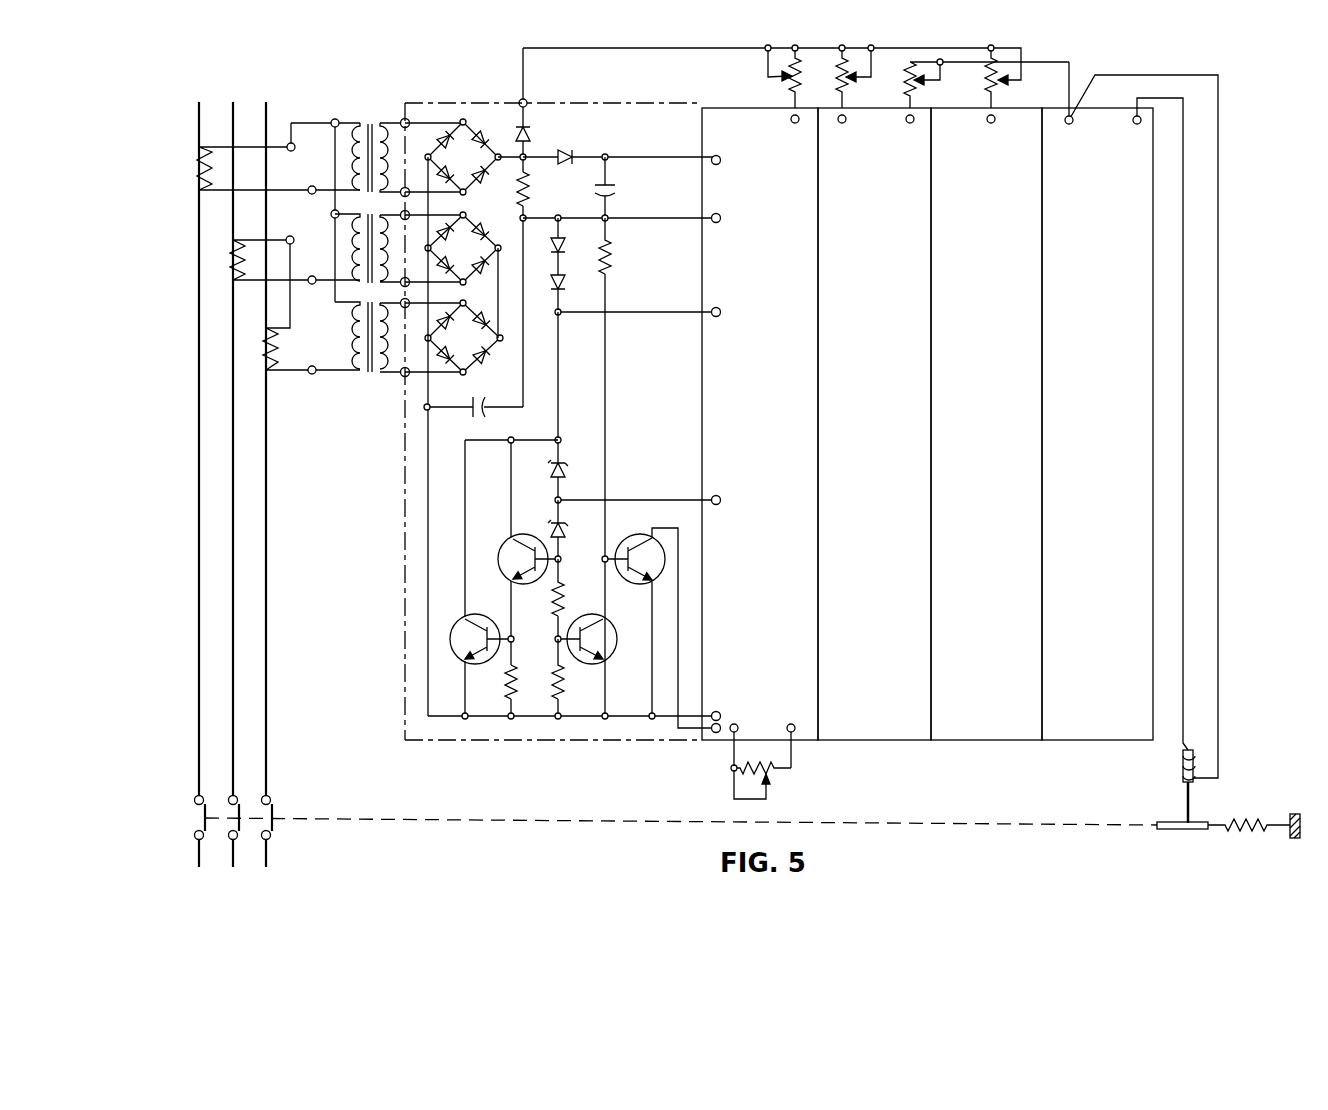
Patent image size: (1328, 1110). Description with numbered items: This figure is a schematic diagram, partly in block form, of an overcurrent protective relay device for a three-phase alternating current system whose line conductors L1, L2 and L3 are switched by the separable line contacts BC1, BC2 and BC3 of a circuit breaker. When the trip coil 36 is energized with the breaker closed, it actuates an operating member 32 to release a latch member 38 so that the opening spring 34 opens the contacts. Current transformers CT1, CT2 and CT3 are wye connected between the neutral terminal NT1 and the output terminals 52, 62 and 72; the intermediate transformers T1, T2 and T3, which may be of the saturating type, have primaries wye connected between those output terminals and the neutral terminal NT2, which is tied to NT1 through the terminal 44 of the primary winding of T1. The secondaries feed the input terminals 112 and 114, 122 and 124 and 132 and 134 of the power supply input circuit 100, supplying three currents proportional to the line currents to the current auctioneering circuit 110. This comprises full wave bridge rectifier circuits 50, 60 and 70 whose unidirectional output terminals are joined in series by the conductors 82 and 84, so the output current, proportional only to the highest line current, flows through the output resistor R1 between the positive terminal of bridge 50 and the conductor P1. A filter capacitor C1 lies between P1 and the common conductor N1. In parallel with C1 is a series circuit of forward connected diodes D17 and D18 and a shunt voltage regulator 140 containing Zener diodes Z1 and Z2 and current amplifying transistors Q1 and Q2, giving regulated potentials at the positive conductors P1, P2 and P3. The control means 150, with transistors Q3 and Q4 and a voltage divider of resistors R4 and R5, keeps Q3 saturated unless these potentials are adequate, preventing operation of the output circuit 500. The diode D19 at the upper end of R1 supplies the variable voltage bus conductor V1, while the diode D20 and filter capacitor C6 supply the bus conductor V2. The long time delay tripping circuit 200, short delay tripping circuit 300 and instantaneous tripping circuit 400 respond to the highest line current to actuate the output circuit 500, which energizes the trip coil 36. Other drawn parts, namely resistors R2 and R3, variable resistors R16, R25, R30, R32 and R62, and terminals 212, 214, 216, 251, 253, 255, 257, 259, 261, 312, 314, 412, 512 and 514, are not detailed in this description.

The line conductor L1 is at (199, 113).
The line conductor L2 is at (233, 113).
The line conductor L3 is at (266, 113).
The separable line contact BC1 is at (205, 800).
The separable line contact BC2 is at (239, 812).
The separable line contact BC3 is at (272, 812).
The current transformer CT1 is at (196, 175).
The current transformer CT2 is at (230, 262).
The current transformer CT3 is at (262, 352).
The neutral terminal NT1 is at (296, 152).
The neutral terminal NT2 is at (337, 157).
The terminal of primary winding of transformer T1 44 is at (343, 110).
The output terminal 52 is at (312, 195).
The output terminal 62 is at (312, 285).
The output terminal 72 is at (312, 375).
The intermediate transformer T1 is at (379, 121).
The intermediate transformer T2 is at (379, 211).
The intermediate transformer T3 is at (379, 393).
The input terminal 112 is at (410, 122).
The input terminal 114 is at (407, 187).
The input terminal 122 is at (410, 213).
The input terminal 124 is at (410, 300).
The input terminal 132 is at (401, 285).
The input terminal 134 is at (404, 378).
The full wave bridge rectifier circuit 50 is at (477, 168).
The full wave bridge rectifier circuit 60 is at (477, 259).
The full wave bridge rectifier circuit 70 is at (477, 349).
The electrical conductor 82 is at (427, 249).
The electrical conductor 84 is at (490, 272).
The filter capacitor C1 is at (481, 395).
The current auctioneering circuit 110 is at (511, 210).
The diode D19 is at (530, 136).
The output resistor R1 is at (530, 195).
The diode D20 is at (566, 153).
The variable voltage bus conductor V2 is at (638, 158).
The filter capacitor C6 is at (618, 191).
The positive conductor P1 is at (658, 218).
The resistor R2 is at (612, 250).
The forward connected diode D17 is at (562, 246).
The forward connected diode D18 is at (553, 282).
The positive conductor P2 is at (637, 312).
The Zener diode Z1 is at (566, 466).
The positive conductor P3 is at (622, 500).
The Zener diode Z2 is at (566, 526).
The shunt voltage regulator 140 is at (545, 615).
The current amplifying transistor Q2 is at (500, 550).
The resistor R4 is at (560, 592).
The current amplifying transistor Q1 is at (480, 617).
The resistor R3 is at (505, 680).
The transistor Q3 is at (612, 651).
The resistor R5 is at (562, 680).
The control means 150 is at (645, 613).
The transistor Q4 is at (622, 542).
The common conductor N1 is at (583, 722).
The power supply input circuit 100 is at (505, 742).
The variable voltage bus conductor V1 is at (585, 48).
The long time delay tripping circuit 200 is at (727, 742).
The short delay tripping circuit 300 is at (897, 781).
The instantaneous tripping circuit 400 is at (999, 781).
The output circuit 500 is at (1102, 781).
The terminal 251 is at (718, 156).
The terminal 253 is at (718, 214).
The terminal 255 is at (718, 308).
The terminal 257 is at (718, 496).
The terminal 259 is at (715, 711).
The terminal 261 is at (714, 734).
The terminal 214 is at (735, 724).
The terminal 216 is at (791, 724).
The variable resistor R62 is at (776, 776).
The variable resistor R16 is at (790, 85).
The terminal 212 is at (795, 124).
The variable resistor R25 is at (846, 86).
The terminal 312 is at (842, 124).
The variable resistor R30 is at (918, 93).
The terminal 314 is at (910, 124).
The variable resistor R32 is at (997, 88).
The terminal 412 is at (991, 124).
The terminal 512 is at (1069, 125).
The terminal 514 is at (1137, 125).
The trip coil 36 is at (1183, 757).
The operating member 32 is at (1191, 808).
The latch member 38 is at (1175, 830).
The opening spring 34 is at (1260, 820).